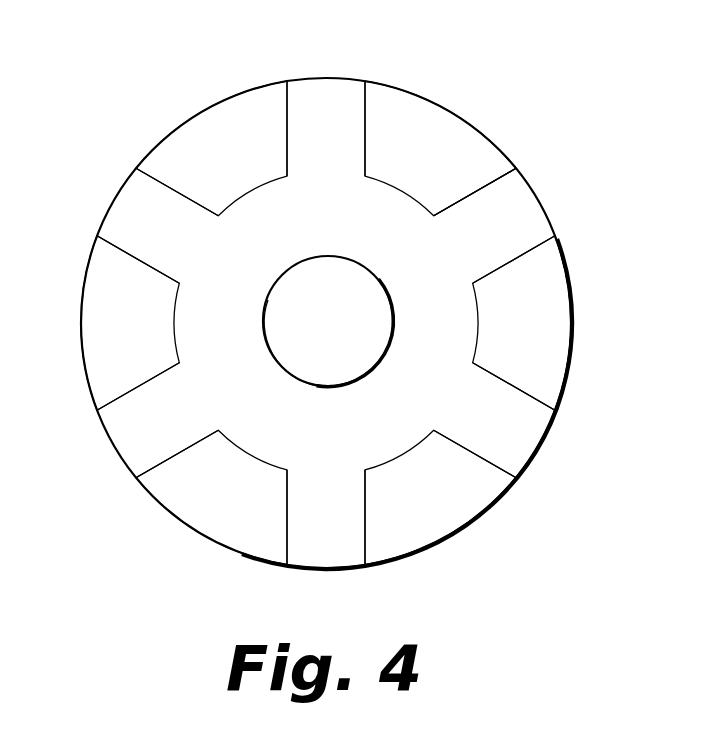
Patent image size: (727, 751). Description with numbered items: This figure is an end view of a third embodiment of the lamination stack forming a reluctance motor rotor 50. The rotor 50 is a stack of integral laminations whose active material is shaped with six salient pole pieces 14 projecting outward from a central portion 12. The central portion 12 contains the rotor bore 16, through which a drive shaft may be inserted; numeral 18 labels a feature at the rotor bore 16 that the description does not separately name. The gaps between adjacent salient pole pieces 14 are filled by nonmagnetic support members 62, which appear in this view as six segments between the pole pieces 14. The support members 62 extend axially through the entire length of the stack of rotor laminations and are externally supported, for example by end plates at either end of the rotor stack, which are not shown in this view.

The rotor 50 is at (108, 83).
The central portion 12 is at (417, 208).
The salient pole pieces 14 is at (323, 77).
The rotor bore 16 is at (340, 305).
The bore wall 18 is at (312, 386).
The nonmagnetic support members 62 is at (442, 165).